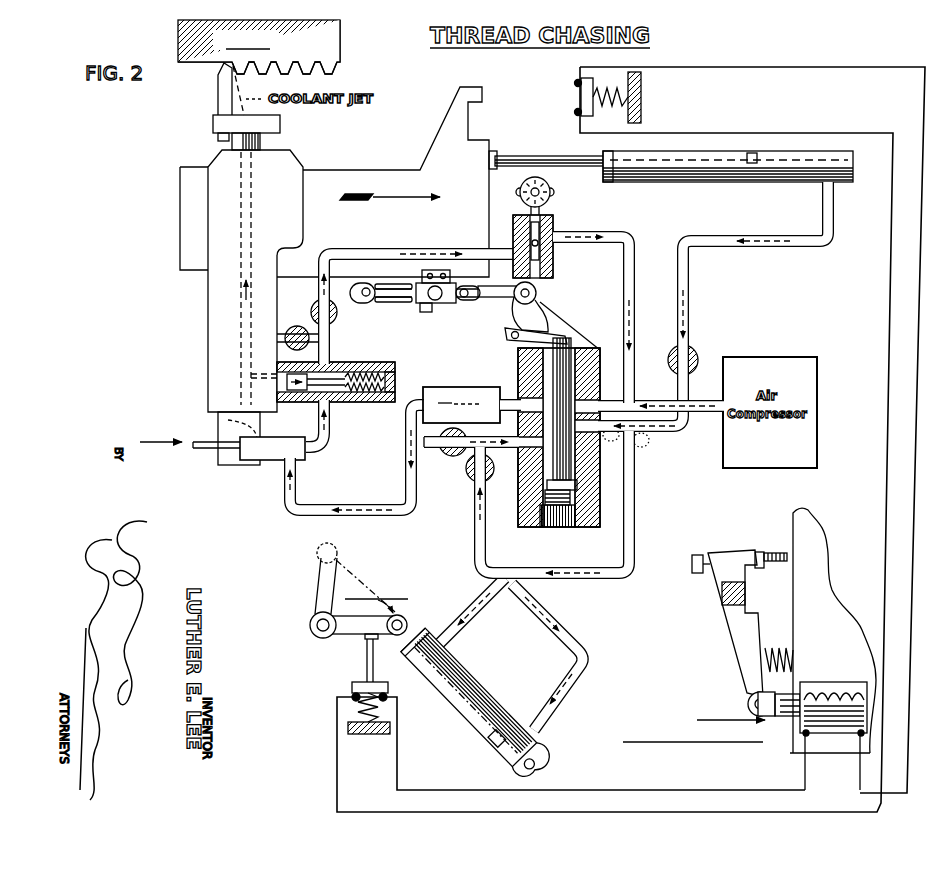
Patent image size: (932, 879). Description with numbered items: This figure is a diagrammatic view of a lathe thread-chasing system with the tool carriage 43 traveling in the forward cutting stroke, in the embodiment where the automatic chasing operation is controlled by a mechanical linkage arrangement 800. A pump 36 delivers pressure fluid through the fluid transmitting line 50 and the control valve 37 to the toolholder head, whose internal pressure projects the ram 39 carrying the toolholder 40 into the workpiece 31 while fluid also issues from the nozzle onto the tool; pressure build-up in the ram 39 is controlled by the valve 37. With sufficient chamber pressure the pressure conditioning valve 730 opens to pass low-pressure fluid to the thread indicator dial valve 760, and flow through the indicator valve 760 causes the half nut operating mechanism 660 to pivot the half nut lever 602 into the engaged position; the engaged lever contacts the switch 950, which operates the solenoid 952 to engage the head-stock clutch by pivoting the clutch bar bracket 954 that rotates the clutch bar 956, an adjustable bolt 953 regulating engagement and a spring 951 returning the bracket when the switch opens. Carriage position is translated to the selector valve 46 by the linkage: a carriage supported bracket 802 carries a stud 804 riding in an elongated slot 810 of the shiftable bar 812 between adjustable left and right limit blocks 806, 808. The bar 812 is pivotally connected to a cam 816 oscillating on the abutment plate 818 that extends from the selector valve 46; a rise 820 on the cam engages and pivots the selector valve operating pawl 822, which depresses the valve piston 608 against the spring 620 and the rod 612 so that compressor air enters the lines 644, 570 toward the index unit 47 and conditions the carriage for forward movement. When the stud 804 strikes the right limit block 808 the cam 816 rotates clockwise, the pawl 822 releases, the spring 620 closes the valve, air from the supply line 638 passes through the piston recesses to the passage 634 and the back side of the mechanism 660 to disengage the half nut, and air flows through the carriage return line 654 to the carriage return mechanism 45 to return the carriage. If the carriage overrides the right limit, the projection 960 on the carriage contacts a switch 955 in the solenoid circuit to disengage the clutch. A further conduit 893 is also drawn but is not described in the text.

The workpiece 31 is at (341, 58).
The toolholder 40 is at (288, 124).
The ram 39 is at (266, 143).
The tool carriage 43 is at (387, 182).
The carriage return mechanism 45 is at (766, 151).
The selector valve 46 is at (512, 369).
The indexing mechanism 47 is at (465, 381).
The fluid transmitting line 50 is at (205, 453).
The pump 36 is at (165, 427).
The control valve 37 is at (282, 430).
The line 570 is at (347, 503).
The half nut lever 602 is at (359, 590).
The valve piston 608 is at (573, 468).
The rod 612 is at (600, 377).
The spring 620 is at (575, 494).
The passage 634 is at (520, 443).
The supply line 638 is at (708, 403).
The line 644 is at (514, 393).
The carriage return line 654 is at (692, 305).
The half nut operating mechanism 660 is at (440, 699).
The pressure conditioning valve 730 is at (339, 357).
The thread indicator dial valve 760 is at (558, 218).
The linkage arrangement 800 is at (478, 327).
The carriage supported bracket 802 is at (425, 312).
The stud 804 is at (436, 303).
The left limit block 806 is at (367, 297).
The right limit block 808 is at (466, 300).
The elongated slot 810 is at (398, 293).
The cam actuating bar 812 is at (381, 283).
The cam 816 is at (542, 306).
The abutment plate 818 is at (515, 356).
The cam rise 820 is at (578, 322).
The selector valve operating pawl 822 is at (570, 340).
The conduit 893 is at (391, 250).
The switch 950 is at (347, 690).
The spring 951 is at (780, 649).
The solenoid 952 is at (823, 681).
The adjustable bolt 953 is at (772, 551).
The clutch bar bracket 954 is at (733, 651).
The switch 955 is at (586, 92).
The clutch bar 956 is at (722, 604).
The projection 960 is at (483, 94).